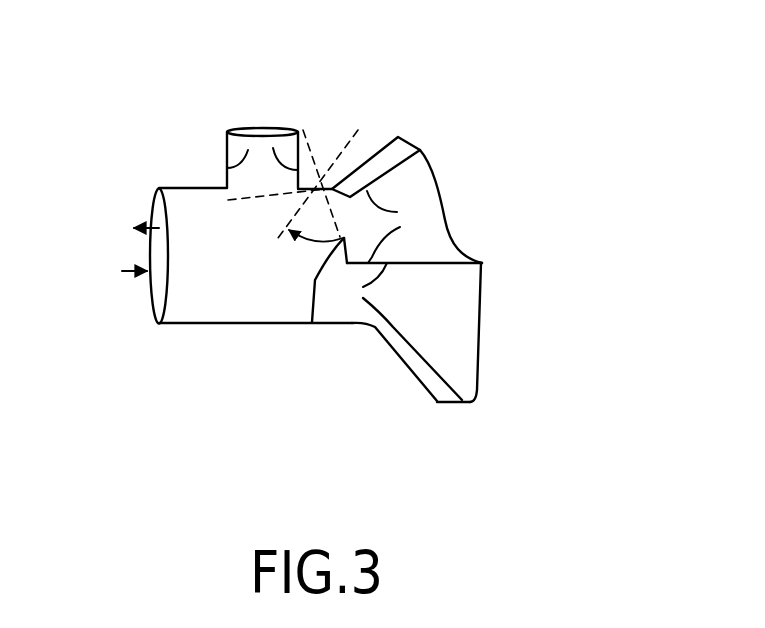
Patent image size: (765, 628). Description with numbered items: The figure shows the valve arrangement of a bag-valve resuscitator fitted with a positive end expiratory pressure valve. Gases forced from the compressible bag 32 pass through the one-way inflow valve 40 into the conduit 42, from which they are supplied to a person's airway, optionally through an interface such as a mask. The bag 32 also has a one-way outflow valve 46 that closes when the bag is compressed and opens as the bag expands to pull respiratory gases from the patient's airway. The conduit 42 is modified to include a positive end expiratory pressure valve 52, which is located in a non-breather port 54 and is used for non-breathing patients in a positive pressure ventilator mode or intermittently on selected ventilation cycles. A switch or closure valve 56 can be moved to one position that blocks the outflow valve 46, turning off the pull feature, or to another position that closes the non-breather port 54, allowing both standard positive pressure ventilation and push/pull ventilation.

The compressible bag 32 is at (457, 403).
The one-way inflow valve 40 is at (377, 312).
The conduit 42 is at (217, 288).
The one-way outflow valve 46 is at (400, 197).
The positive end expiratory pressure valve 52 is at (248, 150).
The non-breather port 54 is at (267, 123).
The closure valve 56 is at (353, 134).